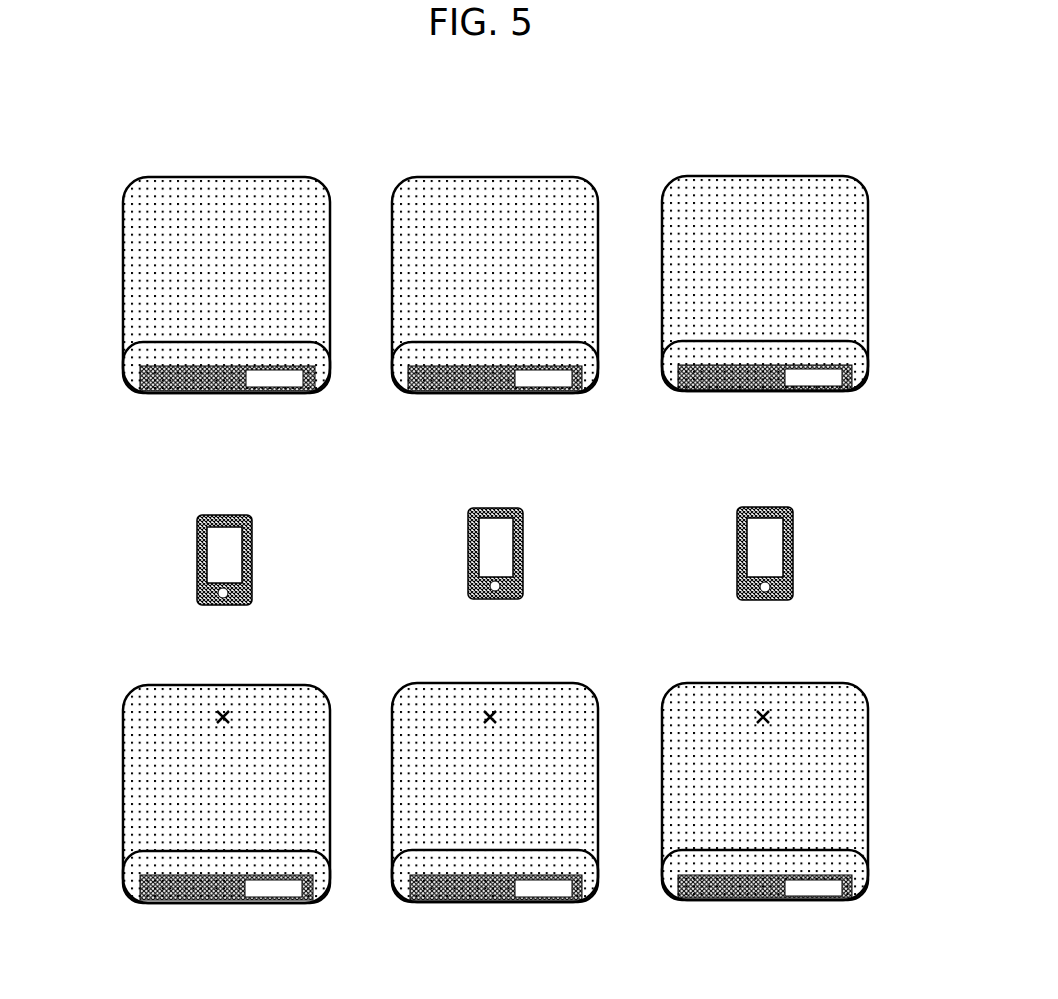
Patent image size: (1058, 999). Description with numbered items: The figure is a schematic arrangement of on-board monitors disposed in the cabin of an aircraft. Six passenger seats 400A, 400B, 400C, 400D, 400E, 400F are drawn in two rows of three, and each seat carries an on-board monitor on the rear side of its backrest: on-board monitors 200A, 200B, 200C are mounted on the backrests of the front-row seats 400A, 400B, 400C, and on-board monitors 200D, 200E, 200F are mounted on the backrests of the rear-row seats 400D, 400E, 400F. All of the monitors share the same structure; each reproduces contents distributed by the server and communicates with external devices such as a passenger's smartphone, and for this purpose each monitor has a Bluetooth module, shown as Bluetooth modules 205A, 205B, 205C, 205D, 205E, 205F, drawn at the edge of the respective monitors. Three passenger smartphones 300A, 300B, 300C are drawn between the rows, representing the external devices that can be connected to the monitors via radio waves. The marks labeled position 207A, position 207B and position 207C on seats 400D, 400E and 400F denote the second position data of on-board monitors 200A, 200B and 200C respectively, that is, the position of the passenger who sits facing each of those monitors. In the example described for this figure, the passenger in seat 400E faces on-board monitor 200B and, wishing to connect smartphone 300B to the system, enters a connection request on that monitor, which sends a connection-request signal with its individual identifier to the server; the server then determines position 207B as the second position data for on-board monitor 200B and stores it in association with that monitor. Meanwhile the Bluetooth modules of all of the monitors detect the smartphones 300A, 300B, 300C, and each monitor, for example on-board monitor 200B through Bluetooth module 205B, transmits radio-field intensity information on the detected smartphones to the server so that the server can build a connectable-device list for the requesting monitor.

The passenger seat 400A is at (170, 192).
The passenger seat 400B is at (438, 192).
The passenger seat 400C is at (708, 187).
The passenger seat 400D is at (165, 695).
The passenger seat 400E is at (445, 697).
The passenger seat 400F is at (710, 702).
The on-board monitor 200A is at (140, 377).
The on-board monitor 200B is at (403, 387).
The on-board monitor 200C is at (670, 387).
The on-board monitor 200D is at (138, 890).
The on-board monitor 200E is at (408, 905).
The on-board monitor 200F is at (673, 903).
The Bluetooth module 205A is at (290, 380).
The Bluetooth module 205B is at (557, 380).
The Bluetooth module 205C is at (820, 378).
The Bluetooth module 205D is at (287, 903).
The Bluetooth module 205E is at (553, 902).
The Bluetooth module 205F is at (825, 900).
The position 207A is at (228, 708).
The position 207B is at (493, 708).
The position 207C is at (767, 708).
The smartphone 300A is at (196, 572).
The smartphone 300B is at (467, 567).
The smartphone 300C is at (737, 563).